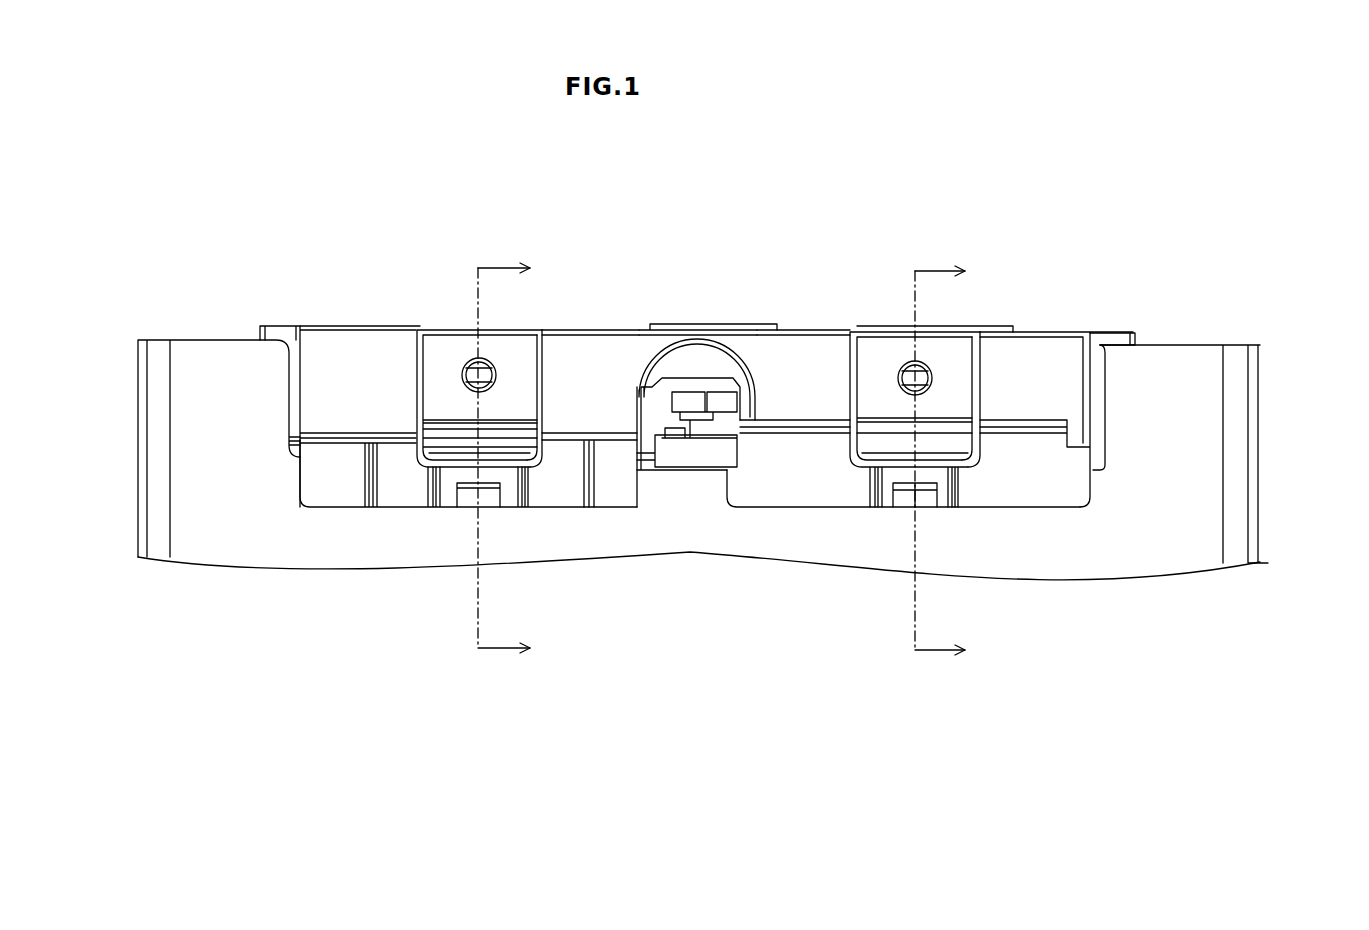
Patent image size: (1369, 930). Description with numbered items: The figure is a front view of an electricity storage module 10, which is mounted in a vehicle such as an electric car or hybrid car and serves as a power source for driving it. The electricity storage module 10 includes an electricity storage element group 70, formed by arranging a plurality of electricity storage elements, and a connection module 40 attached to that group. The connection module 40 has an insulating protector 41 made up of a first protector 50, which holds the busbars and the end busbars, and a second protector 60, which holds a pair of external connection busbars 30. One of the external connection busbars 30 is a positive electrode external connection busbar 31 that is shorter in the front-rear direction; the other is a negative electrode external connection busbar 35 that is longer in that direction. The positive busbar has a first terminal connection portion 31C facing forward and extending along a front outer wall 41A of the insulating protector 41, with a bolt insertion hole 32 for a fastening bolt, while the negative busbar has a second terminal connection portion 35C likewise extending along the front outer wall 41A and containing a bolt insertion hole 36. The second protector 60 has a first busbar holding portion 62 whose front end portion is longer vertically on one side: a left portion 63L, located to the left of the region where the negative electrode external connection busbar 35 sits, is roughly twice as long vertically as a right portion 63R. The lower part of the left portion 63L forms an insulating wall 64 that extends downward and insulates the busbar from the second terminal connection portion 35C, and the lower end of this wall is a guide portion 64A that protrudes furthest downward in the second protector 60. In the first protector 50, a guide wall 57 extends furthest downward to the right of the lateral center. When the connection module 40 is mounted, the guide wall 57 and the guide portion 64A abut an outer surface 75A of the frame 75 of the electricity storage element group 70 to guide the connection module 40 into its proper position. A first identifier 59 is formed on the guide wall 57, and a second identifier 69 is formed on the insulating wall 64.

The electricity storage module 10 is at (1145, 247).
The external connection busbars 30 is at (691, 434).
The positive electrode external connection busbar 31 is at (874, 307).
The first terminal connection portion 31C is at (962, 342).
The bolt insertion hole 32 is at (921, 389).
The negative electrode external connection busbar 35 is at (452, 322).
The second terminal connection portion 35C is at (524, 342).
The bolt insertion hole 36 is at (477, 390).
The connection module 40 is at (360, 296).
The insulating protector 41 is at (1108, 376).
The front outer wall 41A is at (776, 345).
The first protector 50 is at (1106, 490).
The guide wall 57 is at (1053, 491).
The first identifier 59 is at (905, 490).
The second protector 60 is at (630, 315).
The first busbar holding portion 62 is at (323, 341).
The left portion 63L is at (612, 413).
The right portion 63R is at (821, 393).
The insulating wall 64 is at (328, 488).
The guide portion 64A is at (558, 492).
The second identifier 69 is at (468, 490).
The electricity storage element group 70 is at (1268, 448).
The frame 75 is at (1193, 519).
The outer surface 75A is at (195, 518).